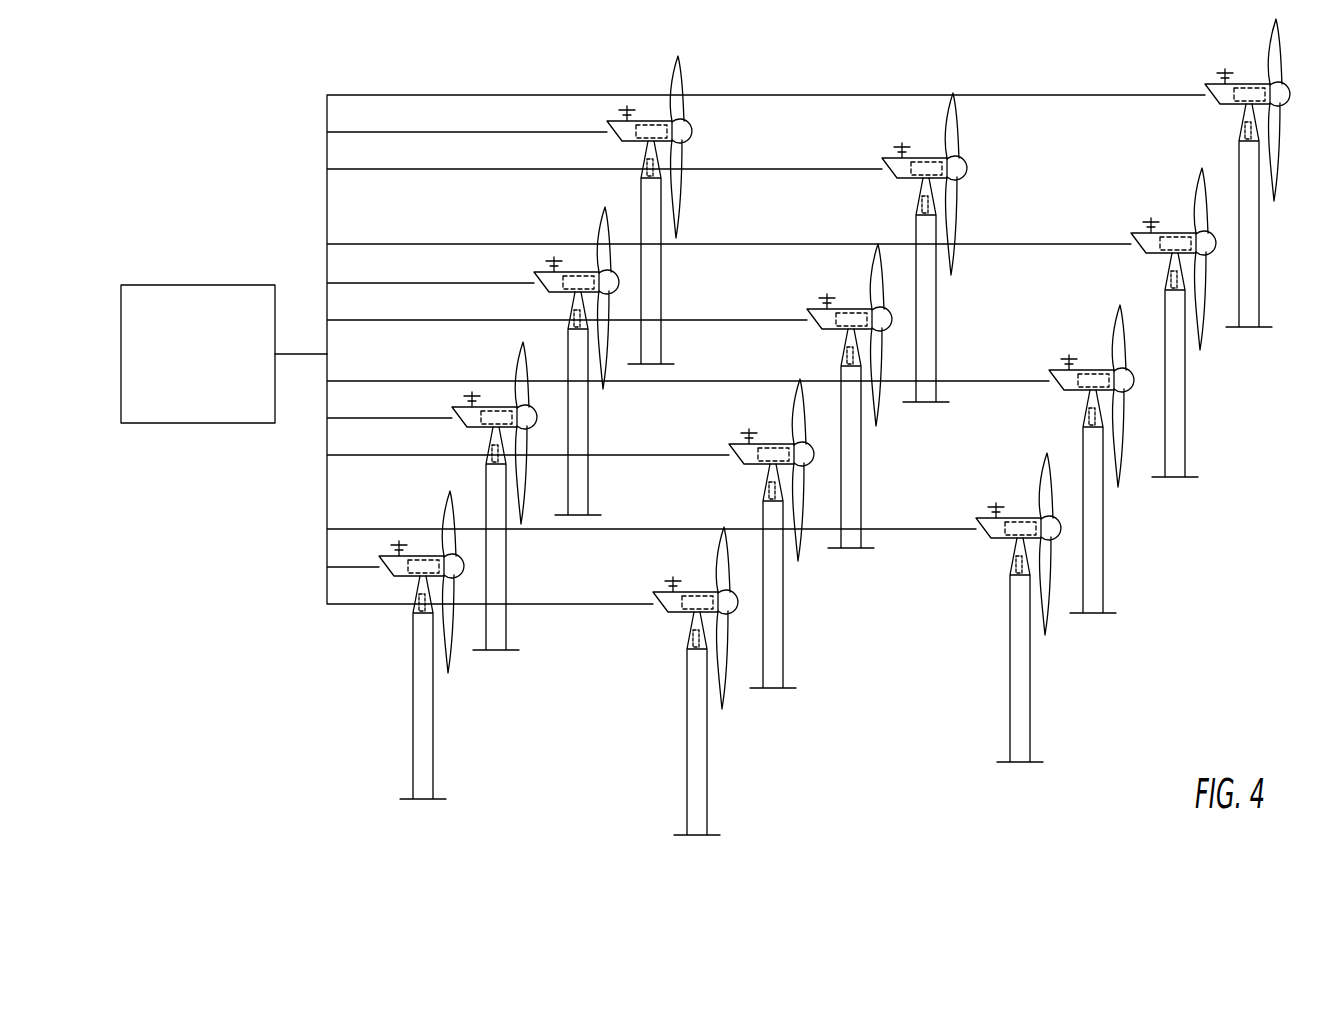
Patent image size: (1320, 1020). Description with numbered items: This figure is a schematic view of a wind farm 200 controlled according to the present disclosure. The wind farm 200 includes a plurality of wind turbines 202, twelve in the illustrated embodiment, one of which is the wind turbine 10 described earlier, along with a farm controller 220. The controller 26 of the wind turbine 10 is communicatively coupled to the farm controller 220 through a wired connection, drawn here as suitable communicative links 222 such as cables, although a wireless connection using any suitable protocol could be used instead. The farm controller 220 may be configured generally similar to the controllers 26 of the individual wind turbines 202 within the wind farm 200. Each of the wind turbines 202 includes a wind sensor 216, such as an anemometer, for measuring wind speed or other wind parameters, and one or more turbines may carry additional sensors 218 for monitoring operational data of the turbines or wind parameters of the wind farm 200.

The wind farm 200 is at (238, 154).
The wind turbines 202 is at (871, 427).
The wind turbine 10 is at (389, 643).
The controller 26 is at (425, 558).
The wind sensor 216 is at (668, 578).
The sensor 218 is at (685, 637).
The farm controller 220 is at (215, 362).
The communicative links 222 is at (478, 243).